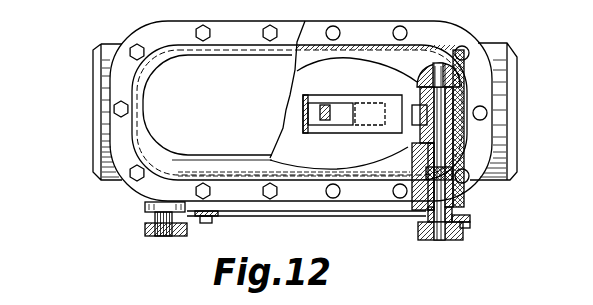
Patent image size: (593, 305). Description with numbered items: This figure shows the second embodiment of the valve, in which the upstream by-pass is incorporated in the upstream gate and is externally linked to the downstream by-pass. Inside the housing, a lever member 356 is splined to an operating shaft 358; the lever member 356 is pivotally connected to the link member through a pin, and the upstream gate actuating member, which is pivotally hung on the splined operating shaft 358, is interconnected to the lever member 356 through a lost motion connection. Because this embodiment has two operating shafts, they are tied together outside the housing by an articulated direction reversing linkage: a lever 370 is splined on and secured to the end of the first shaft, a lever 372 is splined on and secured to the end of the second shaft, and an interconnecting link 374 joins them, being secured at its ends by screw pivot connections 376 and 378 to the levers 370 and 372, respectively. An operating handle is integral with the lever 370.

The lever member 356 is at (460, 100).
The operating shaft 358 is at (402, 137).
The lever 370 is at (147, 226).
The interconnecting link 374 is at (341, 218).
The screw pivot connection 376 is at (214, 223).
The lever 372 is at (415, 240).
The screw pivot connection 378 is at (468, 231).